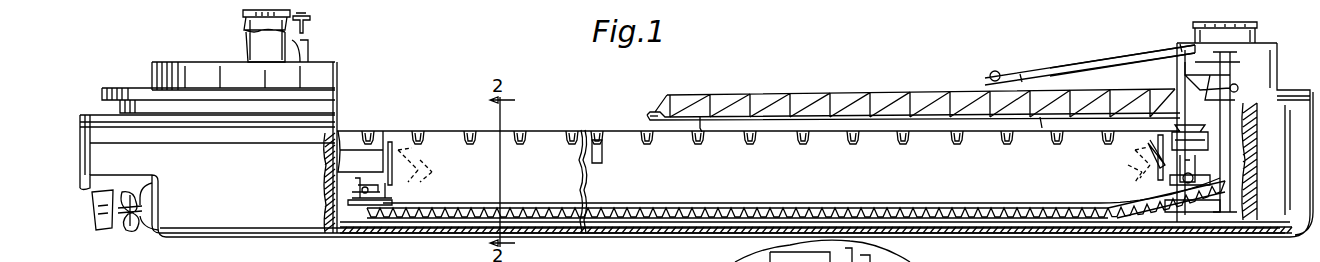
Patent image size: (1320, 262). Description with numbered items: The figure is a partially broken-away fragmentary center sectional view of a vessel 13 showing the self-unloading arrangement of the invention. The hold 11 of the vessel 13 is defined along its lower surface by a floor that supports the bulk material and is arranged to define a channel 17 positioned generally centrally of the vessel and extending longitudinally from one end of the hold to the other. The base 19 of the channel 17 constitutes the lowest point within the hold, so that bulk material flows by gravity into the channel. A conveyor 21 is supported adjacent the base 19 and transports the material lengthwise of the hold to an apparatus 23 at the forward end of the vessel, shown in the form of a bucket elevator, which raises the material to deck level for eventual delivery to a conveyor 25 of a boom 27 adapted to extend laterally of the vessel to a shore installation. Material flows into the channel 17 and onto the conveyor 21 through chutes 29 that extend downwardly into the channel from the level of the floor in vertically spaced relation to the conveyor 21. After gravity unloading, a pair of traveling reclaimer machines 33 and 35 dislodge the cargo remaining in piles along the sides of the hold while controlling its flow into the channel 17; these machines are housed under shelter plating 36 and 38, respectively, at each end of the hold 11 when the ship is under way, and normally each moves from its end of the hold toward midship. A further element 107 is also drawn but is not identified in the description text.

The hold 11 is at (545, 160).
The vessel 13 is at (198, 72).
The channel 17 is at (657, 222).
The base of the channel 19 is at (630, 225).
The conveyor 21 is at (878, 222).
The apparatus 23 is at (1230, 100).
The conveyor of the boom 25 is at (805, 100).
The boom 27 is at (893, 92).
The chutes 29 is at (748, 208).
The traveling reclaimer machine 33 is at (402, 155).
The traveling reclaimer machine 35 is at (1140, 143).
The shelter plating 36 is at (352, 133).
The shelter plating 38 is at (1225, 160).
The truck 107 is at (895, 257).